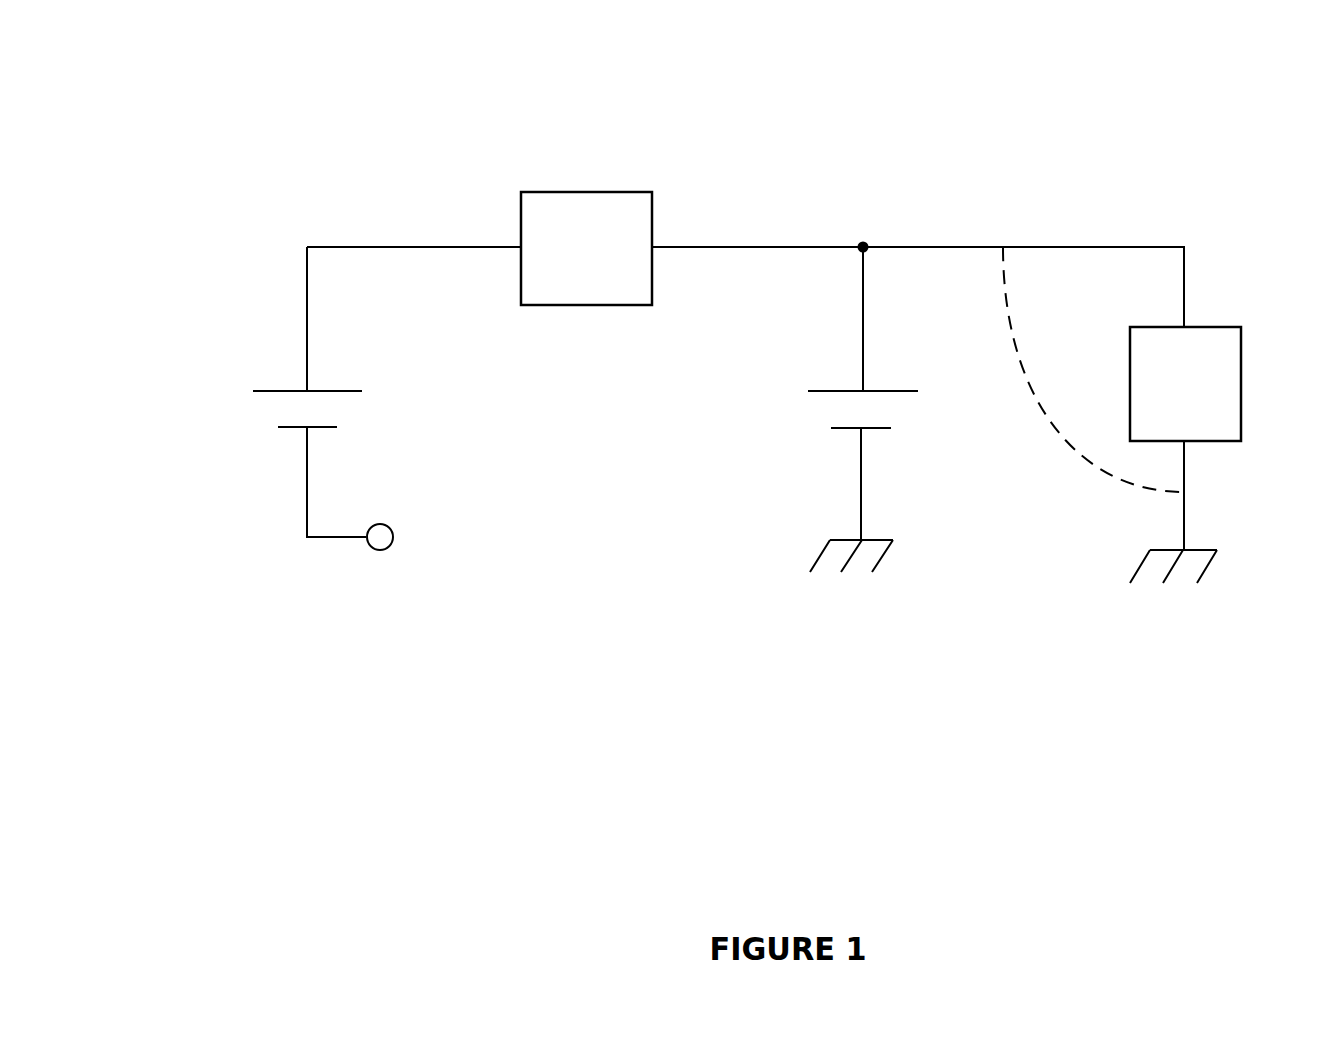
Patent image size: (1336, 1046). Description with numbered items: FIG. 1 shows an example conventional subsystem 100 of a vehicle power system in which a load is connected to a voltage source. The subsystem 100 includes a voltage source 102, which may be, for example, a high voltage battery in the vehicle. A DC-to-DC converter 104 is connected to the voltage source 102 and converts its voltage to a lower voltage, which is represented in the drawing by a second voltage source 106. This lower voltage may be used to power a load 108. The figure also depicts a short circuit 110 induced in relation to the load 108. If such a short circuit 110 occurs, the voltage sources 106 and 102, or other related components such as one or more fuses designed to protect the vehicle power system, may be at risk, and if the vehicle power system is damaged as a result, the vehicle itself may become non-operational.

The conventional subsystem 100 is at (222, 84).
The voltage source 102 is at (300, 417).
The DC-to-DC converter 104 is at (604, 274).
The voltage source 106 is at (836, 409).
The load 108 is at (1203, 407).
The short circuit 110 is at (1093, 369).